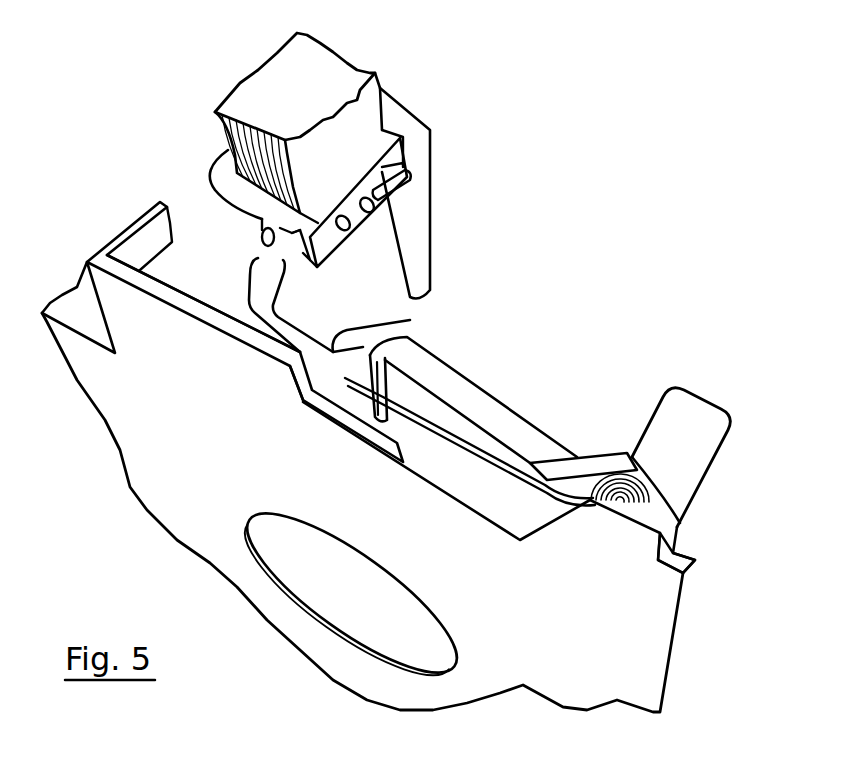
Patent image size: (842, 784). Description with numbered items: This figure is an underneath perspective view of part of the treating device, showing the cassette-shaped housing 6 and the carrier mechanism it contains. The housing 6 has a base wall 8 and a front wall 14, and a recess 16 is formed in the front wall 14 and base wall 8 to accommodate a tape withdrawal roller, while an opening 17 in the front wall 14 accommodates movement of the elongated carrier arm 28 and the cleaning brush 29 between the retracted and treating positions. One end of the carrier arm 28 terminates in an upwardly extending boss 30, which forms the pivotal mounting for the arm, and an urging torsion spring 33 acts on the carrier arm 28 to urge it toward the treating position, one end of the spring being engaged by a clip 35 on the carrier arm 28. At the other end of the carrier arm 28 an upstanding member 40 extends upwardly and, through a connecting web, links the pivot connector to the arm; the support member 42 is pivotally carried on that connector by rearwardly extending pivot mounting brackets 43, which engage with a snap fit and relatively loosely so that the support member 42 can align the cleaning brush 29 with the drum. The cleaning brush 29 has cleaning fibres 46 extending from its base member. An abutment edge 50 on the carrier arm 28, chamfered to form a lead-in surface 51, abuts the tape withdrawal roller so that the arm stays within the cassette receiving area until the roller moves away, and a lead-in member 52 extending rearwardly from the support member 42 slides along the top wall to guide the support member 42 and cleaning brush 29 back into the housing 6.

The housing 6 is at (590, 685).
The base wall 8 is at (653, 623).
The front wall 14 is at (128, 223).
The recess 16 is at (80, 313).
The opening 17 is at (197, 278).
The carrier arm 28 is at (410, 326).
The cleaning brush 29 is at (325, 70).
The boss 30 is at (700, 443).
The torsion spring 33 is at (600, 497).
The clip 35 is at (377, 397).
The upstanding member 40 is at (293, 262).
The support member 42 is at (397, 123).
The pivot mounting brackets 43 is at (262, 228).
The cleaning fibres 46 is at (273, 83).
The abutment edge 50 is at (493, 375).
The lead-in surface 51 is at (518, 418).
The lead-in member 52 is at (422, 240).